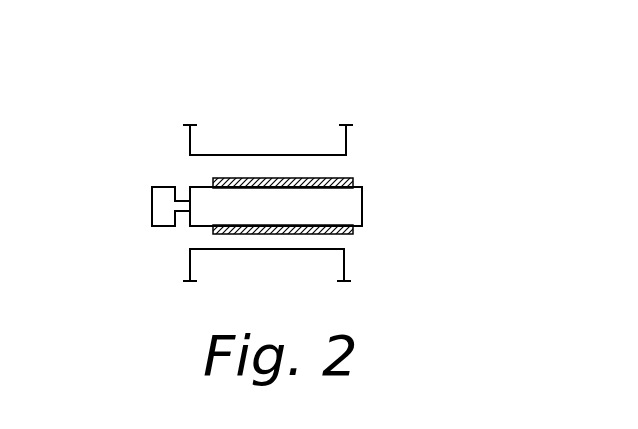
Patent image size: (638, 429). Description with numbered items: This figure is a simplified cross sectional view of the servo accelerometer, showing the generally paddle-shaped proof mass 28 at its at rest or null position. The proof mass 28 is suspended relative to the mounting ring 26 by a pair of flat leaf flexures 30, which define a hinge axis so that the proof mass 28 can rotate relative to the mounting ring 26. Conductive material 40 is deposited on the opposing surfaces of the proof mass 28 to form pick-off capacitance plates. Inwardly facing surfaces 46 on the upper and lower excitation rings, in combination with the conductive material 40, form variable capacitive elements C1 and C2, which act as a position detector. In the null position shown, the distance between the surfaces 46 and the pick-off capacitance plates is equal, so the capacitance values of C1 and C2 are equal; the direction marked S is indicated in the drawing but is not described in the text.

The mounting ring 26 is at (152, 211).
The proof mass 28 is at (362, 210).
The flat leaf flexures 30 is at (183, 213).
The conductive material 40 is at (353, 180).
The inwardly facing surfaces 46 is at (268, 162).
The variable capacitive element C1 is at (195, 162).
The variable capacitive element C2 is at (358, 242).
The shear direction S is at (514, 260).